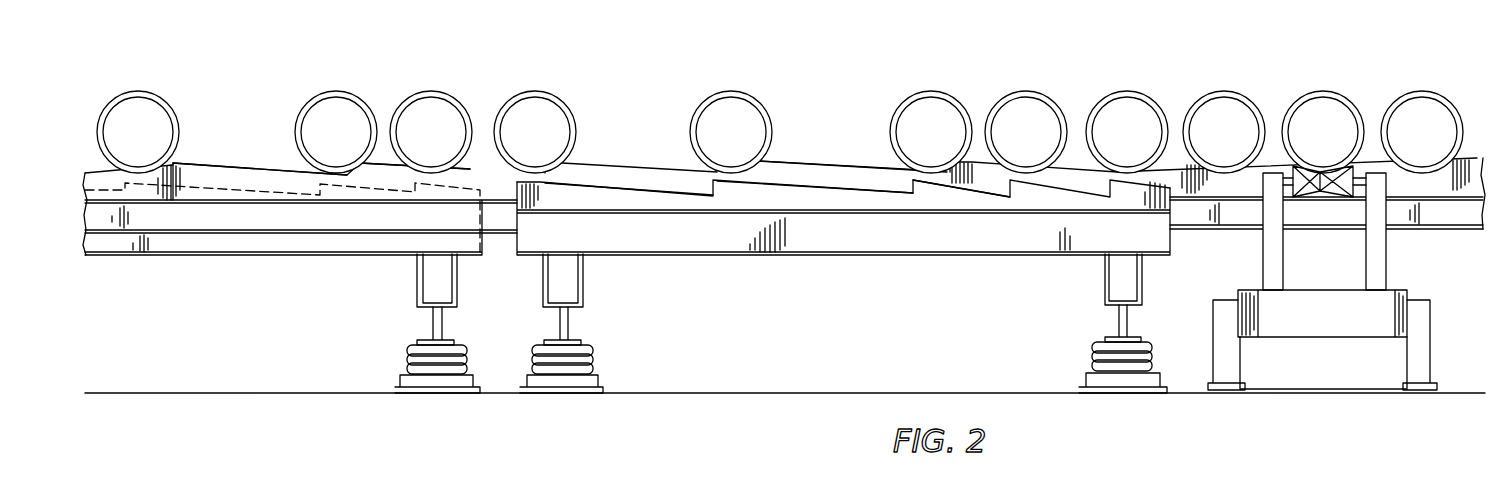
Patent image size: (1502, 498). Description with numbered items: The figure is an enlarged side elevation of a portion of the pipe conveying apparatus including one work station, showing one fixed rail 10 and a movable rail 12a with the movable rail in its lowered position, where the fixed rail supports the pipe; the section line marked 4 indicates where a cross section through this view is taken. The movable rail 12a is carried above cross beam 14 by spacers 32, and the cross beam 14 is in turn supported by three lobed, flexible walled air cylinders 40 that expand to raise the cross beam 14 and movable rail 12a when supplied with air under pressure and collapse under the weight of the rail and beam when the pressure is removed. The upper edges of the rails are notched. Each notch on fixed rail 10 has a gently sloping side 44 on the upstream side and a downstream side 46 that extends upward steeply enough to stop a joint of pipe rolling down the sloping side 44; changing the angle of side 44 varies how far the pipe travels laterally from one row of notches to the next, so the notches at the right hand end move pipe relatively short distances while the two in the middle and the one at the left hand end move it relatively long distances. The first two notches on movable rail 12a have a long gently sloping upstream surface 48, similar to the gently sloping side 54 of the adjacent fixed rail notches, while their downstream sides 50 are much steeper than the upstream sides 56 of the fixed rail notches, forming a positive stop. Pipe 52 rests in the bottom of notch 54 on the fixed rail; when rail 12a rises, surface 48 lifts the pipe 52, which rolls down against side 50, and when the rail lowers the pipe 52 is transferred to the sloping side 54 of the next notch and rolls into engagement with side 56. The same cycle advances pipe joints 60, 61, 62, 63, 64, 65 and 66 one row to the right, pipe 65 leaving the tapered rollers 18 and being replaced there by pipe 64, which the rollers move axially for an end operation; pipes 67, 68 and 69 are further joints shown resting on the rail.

The fixed rail 10 is at (830, 160).
The movable rail 12a is at (838, 238).
The cross beam 14 is at (442, 330).
The tapered rollers 18 is at (1338, 185).
The spacer 32 is at (417, 277).
The air cylinder 40 is at (400, 360).
The gently sloping side 44 is at (236, 168).
The downstream side 46 is at (348, 170).
The gently sloping upstream surface 48 is at (588, 183).
The downstream side 50 is at (900, 178).
The pipe 52 is at (553, 100).
The gently sloping side 54 is at (490, 160).
The upstream side 56 is at (748, 168).
The pipe joint 60 is at (731, 92).
The pipe joint 61 is at (930, 92).
The pipe joint 62 is at (1026, 92).
The pipe joint 63 is at (1126, 92).
The pipe joint 64 is at (1226, 92).
The pipe joint 65 is at (1323, 92).
The pipe joint 66 is at (1422, 92).
The pipe 67 is at (155, 97).
The pipe 68 is at (336, 92).
The pipe 69 is at (432, 92).
The section line 4 is at (505, 70).